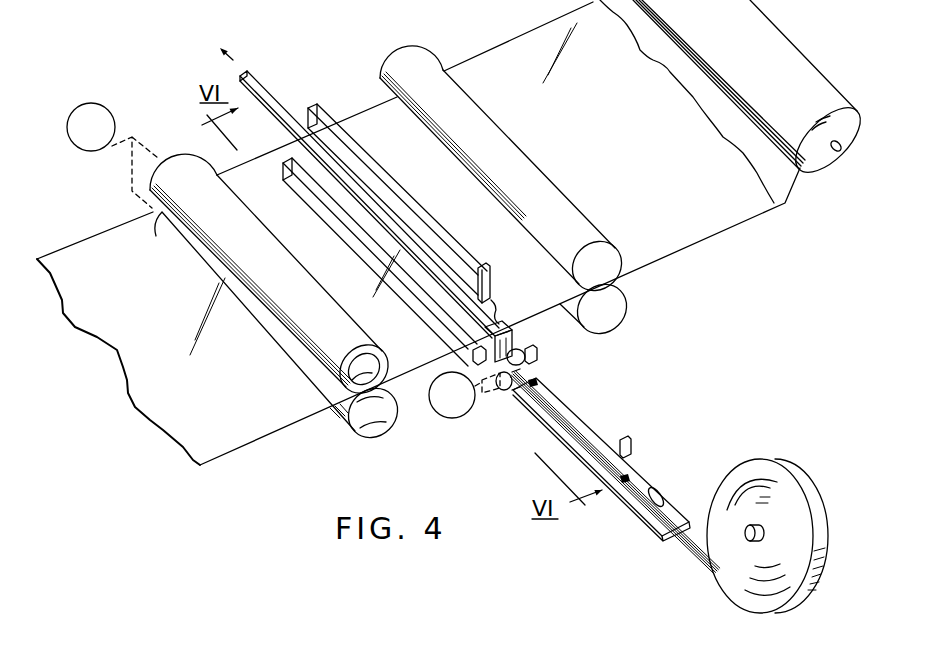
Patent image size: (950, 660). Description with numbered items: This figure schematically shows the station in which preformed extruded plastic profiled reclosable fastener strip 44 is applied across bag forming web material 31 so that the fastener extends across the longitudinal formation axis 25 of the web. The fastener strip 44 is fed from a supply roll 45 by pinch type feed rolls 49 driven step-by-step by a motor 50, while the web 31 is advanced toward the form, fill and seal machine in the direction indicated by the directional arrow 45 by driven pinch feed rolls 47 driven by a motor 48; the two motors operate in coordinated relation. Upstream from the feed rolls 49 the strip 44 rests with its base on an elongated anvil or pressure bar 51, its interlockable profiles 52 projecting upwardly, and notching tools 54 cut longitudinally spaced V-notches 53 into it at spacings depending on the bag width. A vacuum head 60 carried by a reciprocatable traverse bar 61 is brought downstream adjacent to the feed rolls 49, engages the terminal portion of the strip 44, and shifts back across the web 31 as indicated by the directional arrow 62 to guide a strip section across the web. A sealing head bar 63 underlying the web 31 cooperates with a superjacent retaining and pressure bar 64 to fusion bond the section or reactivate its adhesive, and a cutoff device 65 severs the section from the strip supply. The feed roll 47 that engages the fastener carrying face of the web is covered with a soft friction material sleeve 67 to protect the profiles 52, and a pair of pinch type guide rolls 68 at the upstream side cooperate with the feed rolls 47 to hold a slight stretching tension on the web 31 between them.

The longitudinal formation axis 25 is at (622, 105).
The web material 31 is at (235, 451).
The fastener strip 44 is at (697, 560).
The supply roll 45 is at (788, 462).
The pinch feed rolls 47 is at (332, 408).
The motor 48 is at (75, 146).
The feed rolls 49 is at (516, 392).
The motor 50 is at (445, 418).
The anvil or pressure bar 51 is at (637, 518).
The interlockable profiles 52 is at (657, 494).
The V-notches 53 is at (540, 381).
The notching tools 54 is at (536, 348).
The vacuum head 60 is at (488, 333).
The traverse bar 61 is at (263, 89).
The directional arrow 62 is at (233, 60).
The sealing head bar 63 is at (480, 356).
The retaining and pressure bar 64 is at (457, 256).
The cutoff device 65 is at (490, 280).
The friction material sleeve 67 is at (356, 346).
The guide rolls 68 is at (618, 290).